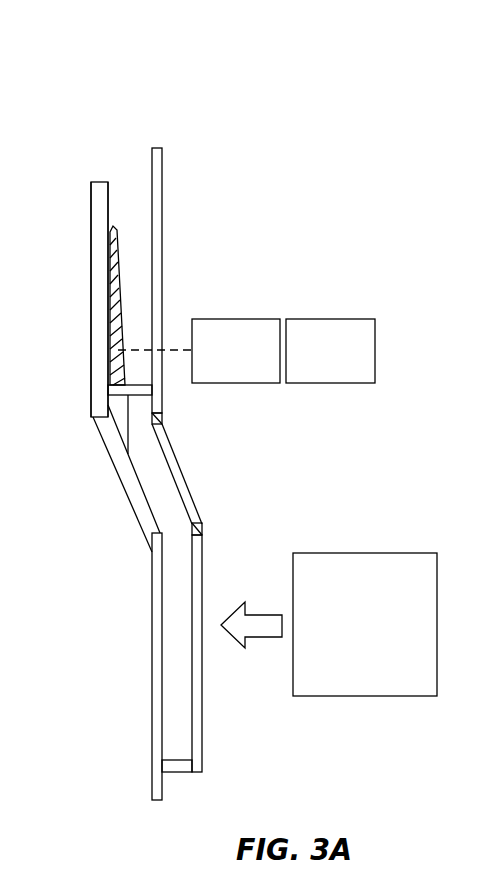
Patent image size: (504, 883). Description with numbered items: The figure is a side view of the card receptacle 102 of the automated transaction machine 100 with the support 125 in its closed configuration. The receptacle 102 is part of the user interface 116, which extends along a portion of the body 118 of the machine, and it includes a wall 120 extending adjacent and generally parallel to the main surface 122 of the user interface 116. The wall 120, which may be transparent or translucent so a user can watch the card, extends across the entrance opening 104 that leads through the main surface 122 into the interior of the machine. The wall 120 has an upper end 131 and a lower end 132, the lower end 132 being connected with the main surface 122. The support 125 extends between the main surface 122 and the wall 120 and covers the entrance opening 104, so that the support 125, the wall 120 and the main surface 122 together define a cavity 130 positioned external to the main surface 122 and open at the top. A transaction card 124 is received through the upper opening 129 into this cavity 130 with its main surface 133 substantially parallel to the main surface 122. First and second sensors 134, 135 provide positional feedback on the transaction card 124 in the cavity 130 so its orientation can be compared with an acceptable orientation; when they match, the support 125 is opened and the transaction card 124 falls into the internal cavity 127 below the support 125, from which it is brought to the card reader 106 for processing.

The automated transaction machine (ATM) 100 is at (242, 136).
The card receptacle 102 is at (66, 66).
The entrance opening 104 is at (170, 431).
The card reader 106 is at (365, 696).
The user interface 116 is at (114, 606).
The body 118 is at (289, 249).
The wall 120 is at (78, 259).
The main surface 122 is at (152, 174).
The transaction card 124 is at (115, 307).
The support 125 is at (130, 432).
The internal cavity 127 is at (150, 685).
The upper opening 129 is at (113, 185).
The cavity 130 is at (166, 299).
The upper end 131 is at (91, 200).
The lower end 132 is at (146, 523).
The main surface of the transaction card 133 is at (117, 267).
The first sensor 134 is at (233, 383).
The second sensor 135 is at (330, 383).